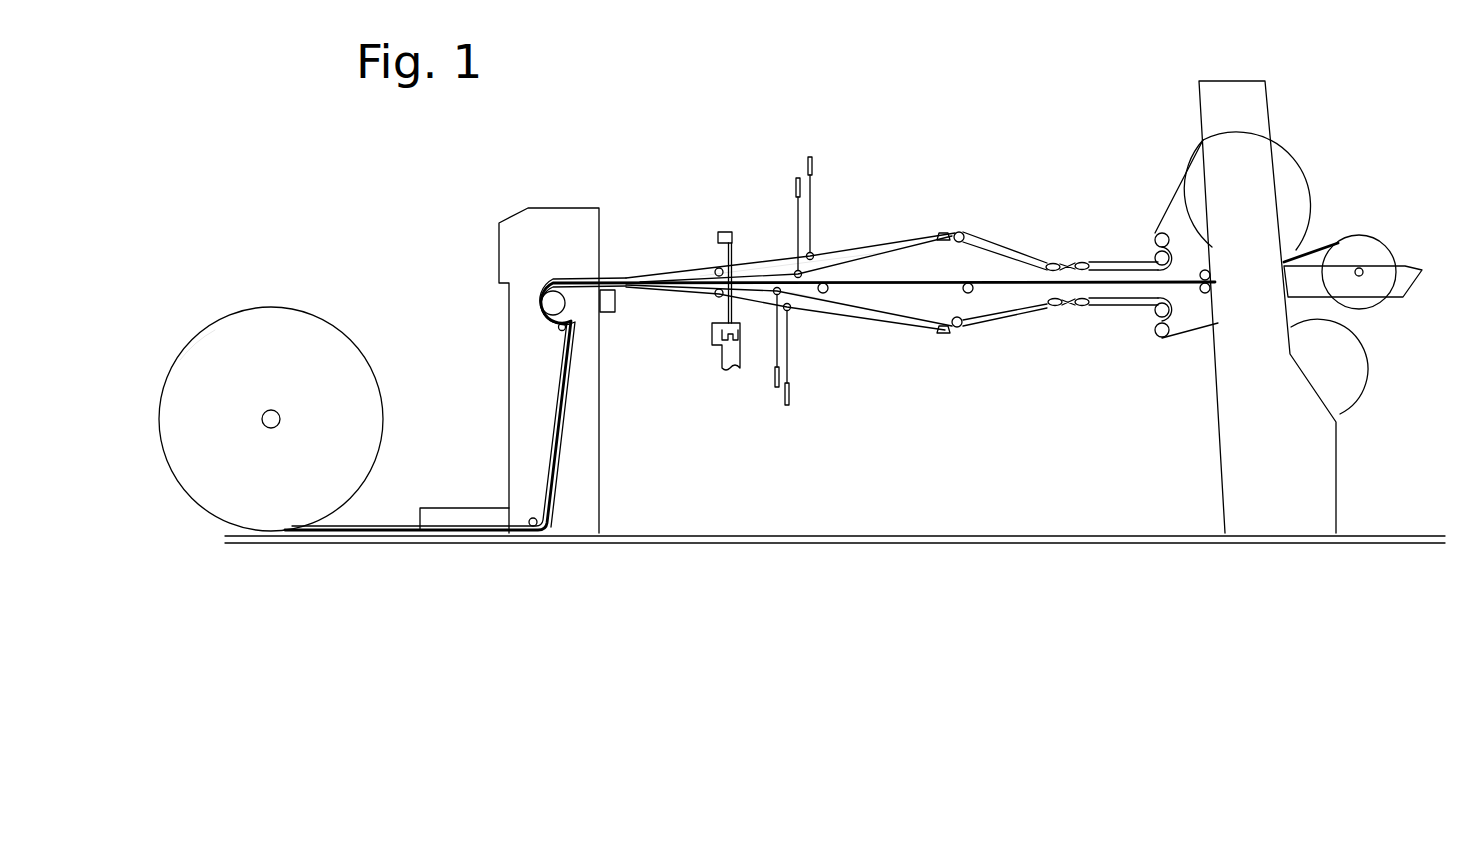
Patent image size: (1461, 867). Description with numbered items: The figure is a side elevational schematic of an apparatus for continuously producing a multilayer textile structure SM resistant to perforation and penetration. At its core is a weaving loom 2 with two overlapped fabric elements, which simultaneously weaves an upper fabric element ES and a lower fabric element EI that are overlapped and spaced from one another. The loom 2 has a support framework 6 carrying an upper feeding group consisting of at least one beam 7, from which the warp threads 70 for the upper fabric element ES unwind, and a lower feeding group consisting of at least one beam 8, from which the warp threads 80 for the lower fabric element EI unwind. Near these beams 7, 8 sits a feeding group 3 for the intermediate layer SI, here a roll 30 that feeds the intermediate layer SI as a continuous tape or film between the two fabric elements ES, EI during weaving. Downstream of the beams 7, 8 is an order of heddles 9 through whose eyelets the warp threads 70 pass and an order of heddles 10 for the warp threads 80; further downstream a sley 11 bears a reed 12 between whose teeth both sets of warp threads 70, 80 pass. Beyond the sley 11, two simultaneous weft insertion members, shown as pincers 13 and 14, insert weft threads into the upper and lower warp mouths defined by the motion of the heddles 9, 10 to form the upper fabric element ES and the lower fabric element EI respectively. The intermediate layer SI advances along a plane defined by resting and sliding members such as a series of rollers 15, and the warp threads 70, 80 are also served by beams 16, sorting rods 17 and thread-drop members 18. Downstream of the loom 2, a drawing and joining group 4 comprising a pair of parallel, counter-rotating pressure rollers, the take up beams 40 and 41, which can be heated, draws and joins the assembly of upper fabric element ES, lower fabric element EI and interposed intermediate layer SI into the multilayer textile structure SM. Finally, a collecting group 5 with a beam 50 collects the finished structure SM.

The weaving loom 2 is at (880, 462).
The feeding group 3 is at (1399, 238).
The drawing and joining group 4 is at (521, 273).
The collecting group 5 is at (216, 296).
The support framework 6 is at (1338, 502).
The beam 7 is at (1303, 150).
The beam 8 is at (1345, 394).
The heddles 9 is at (820, 157).
The heddles 10 is at (776, 406).
The sley 11 is at (728, 357).
The reed 12 is at (732, 250).
The pincer 13 is at (716, 268).
The pincer 14 is at (717, 297).
The rollers 15 is at (970, 294).
The beams 16 is at (1160, 332).
The sorting rods 17 is at (1078, 260).
The thread-drop members 18 is at (957, 231).
The roll 30 is at (1370, 305).
The take up beam 40 is at (545, 303).
The take up beam 41 is at (559, 329).
The beam 50 is at (192, 375).
The warp threads 70 is at (870, 243).
The warp threads 80 is at (847, 308).
The multilayer textile structure SM is at (538, 387).
The upper fabric element ES is at (623, 275).
The lower fabric element EI is at (627, 288).
The intermediate layer SI is at (908, 287).